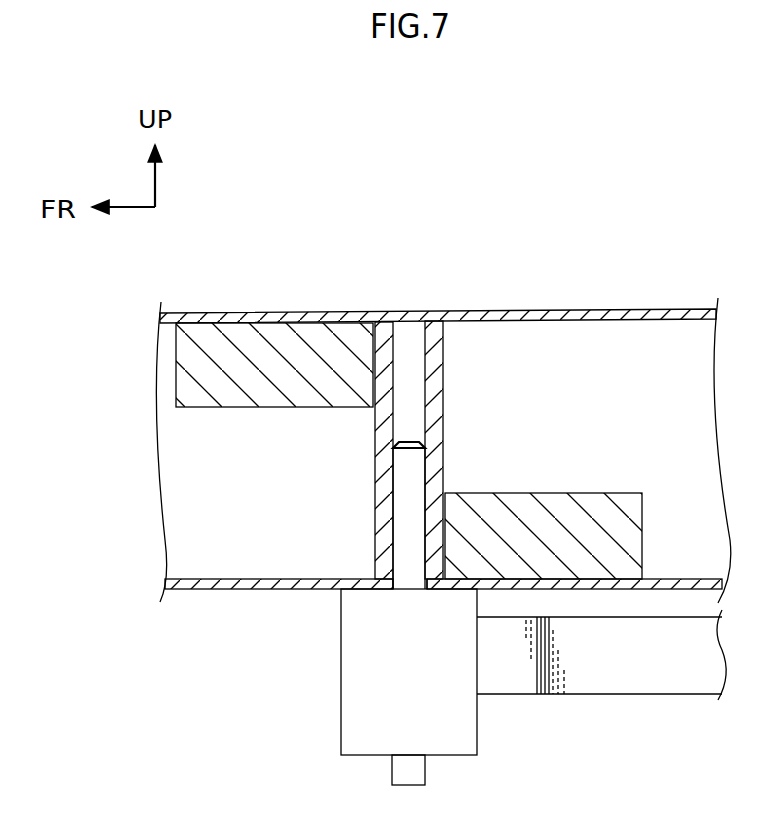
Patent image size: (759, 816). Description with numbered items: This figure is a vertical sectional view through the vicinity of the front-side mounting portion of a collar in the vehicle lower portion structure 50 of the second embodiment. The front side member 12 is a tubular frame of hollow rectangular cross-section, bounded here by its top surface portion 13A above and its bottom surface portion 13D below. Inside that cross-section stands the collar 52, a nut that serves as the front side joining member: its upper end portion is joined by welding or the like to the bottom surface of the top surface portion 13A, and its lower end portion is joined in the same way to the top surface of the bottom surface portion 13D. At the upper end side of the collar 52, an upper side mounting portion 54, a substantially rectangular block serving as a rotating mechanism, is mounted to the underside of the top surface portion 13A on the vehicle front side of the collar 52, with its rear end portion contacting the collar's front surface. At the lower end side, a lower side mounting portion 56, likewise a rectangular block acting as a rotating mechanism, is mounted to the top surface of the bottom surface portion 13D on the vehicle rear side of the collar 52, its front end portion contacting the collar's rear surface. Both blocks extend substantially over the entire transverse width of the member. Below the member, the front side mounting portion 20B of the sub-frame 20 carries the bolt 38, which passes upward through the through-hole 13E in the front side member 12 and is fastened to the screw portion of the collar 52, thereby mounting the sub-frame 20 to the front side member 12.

The front side member 12 is at (583, 311).
The top surface portion 13A is at (527, 316).
The bottom surface portion 13D is at (210, 591).
The through-hole 13E is at (394, 582).
The sub-frame 20 is at (609, 700).
The front side mounting portion 20B is at (348, 672).
The bolt 38 is at (403, 501).
The vehicle lower portion structure 50 is at (452, 270).
The collar 52 is at (375, 448).
The upper side mounting portion 54 is at (228, 410).
The lower side mounting portion 56 is at (553, 492).